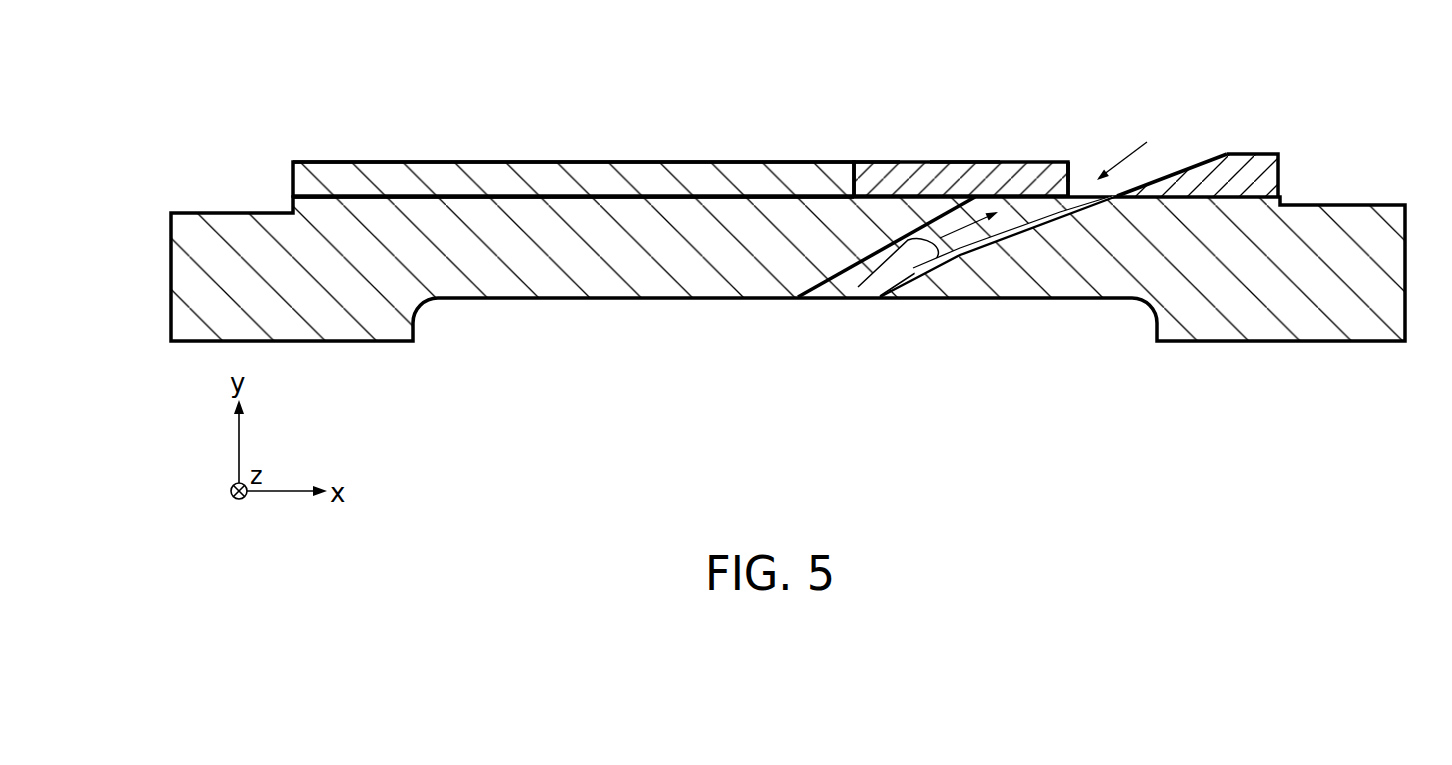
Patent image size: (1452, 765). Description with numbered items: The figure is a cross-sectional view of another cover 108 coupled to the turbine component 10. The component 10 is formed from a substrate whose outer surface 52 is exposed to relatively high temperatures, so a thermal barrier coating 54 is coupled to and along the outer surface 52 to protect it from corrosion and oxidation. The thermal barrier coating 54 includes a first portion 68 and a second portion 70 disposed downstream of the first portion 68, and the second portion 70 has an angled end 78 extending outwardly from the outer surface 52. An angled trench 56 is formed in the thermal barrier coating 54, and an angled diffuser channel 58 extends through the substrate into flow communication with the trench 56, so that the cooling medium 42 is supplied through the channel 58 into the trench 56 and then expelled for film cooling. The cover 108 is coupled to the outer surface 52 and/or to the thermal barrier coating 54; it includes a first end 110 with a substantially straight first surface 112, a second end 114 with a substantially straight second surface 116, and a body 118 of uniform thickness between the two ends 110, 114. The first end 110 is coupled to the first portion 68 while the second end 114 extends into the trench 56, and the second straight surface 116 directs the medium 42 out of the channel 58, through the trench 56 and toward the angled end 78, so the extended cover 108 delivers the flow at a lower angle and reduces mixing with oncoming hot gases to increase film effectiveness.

The turbine component 10 is at (478, 255).
The medium 42 is at (970, 224).
The outer surface 52 is at (521, 198).
The thermal barrier coating 54 is at (441, 173).
The angled trench 56 is at (989, 210).
The diffuser channel 58 is at (937, 253).
The first portion 68 is at (620, 163).
The second portion 70 is at (1268, 154).
The angled end 78 is at (1223, 153).
The cover 108 is at (908, 168).
The first end 110 is at (851, 173).
The first straight surface 112 is at (862, 162).
The second end 114 is at (1068, 162).
The second straight surface 116 is at (1069, 162).
The body 118 is at (957, 175).